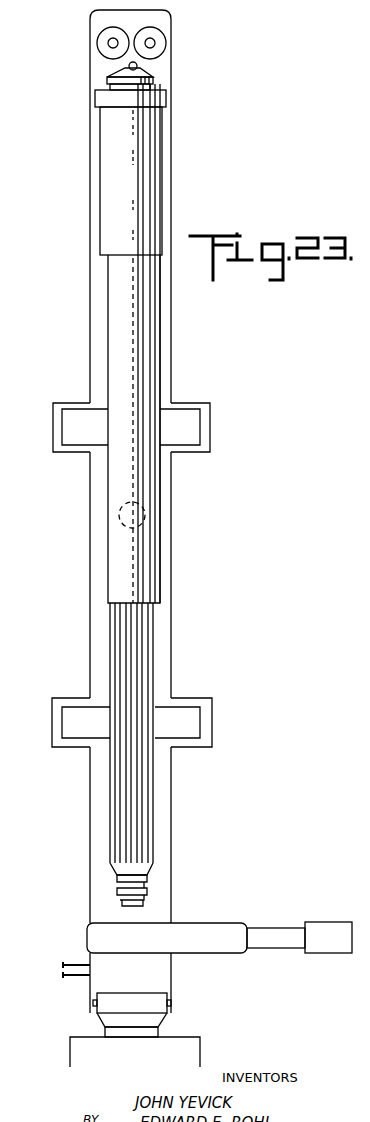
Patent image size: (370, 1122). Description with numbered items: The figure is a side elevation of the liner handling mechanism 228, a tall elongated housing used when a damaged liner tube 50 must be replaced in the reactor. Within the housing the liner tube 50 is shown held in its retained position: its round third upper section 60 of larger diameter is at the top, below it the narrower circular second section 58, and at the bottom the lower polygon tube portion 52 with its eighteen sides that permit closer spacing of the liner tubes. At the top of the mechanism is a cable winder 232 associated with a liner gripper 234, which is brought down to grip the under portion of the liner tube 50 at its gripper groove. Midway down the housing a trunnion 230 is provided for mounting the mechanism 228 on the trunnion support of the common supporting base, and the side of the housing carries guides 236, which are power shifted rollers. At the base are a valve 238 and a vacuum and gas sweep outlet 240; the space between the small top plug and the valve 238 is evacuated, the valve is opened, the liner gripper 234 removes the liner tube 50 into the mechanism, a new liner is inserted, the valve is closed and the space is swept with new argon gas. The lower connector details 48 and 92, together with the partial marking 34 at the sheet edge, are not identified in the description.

The liner handling mechanism 228 is at (192, 597).
The cable winder 232 is at (166, 43).
The liner gripper 234 is at (153, 80).
The third upper section 60 is at (150, 177).
The second section 58 is at (142, 393).
The liner tube 50 is at (147, 340).
The guides 236 is at (190, 427).
The trunnion 230 is at (146, 513).
The lower polygon tube portion 52 is at (138, 672).
The valve 238 is at (227, 933).
The vacuum and gas sweep outlet 240 is at (72, 978).
The connector 48 is at (118, 1048).
The base 92 is at (163, 1048).
The adjacent element 34 is at (14, 326).